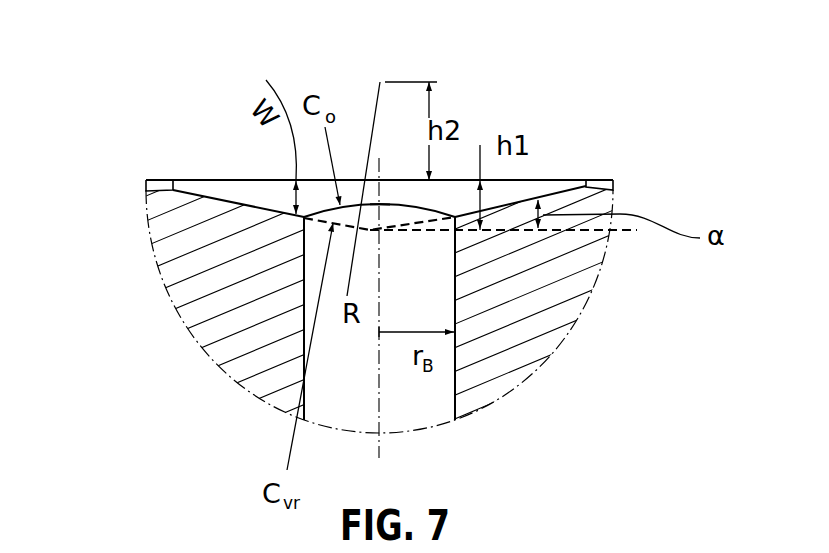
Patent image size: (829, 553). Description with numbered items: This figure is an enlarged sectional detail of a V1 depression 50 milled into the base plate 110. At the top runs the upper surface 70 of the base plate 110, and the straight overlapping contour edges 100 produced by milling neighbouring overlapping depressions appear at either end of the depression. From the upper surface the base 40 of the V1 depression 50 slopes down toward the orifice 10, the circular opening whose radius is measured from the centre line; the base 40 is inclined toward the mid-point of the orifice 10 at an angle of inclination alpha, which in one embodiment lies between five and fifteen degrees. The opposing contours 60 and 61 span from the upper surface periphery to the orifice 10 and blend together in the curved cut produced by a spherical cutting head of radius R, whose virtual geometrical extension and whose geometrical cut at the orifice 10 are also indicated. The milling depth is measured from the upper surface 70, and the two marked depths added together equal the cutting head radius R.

The orifice 10 is at (422, 390).
The base 40 is at (212, 197).
The V1 depression 50 is at (258, 192).
The opposing contour 60 is at (364, 204).
The opposing contour 61 is at (400, 205).
The upper surface 70 is at (543, 180).
The overlapping contour edge 100 is at (613, 182).
The base plate 110 is at (218, 288).